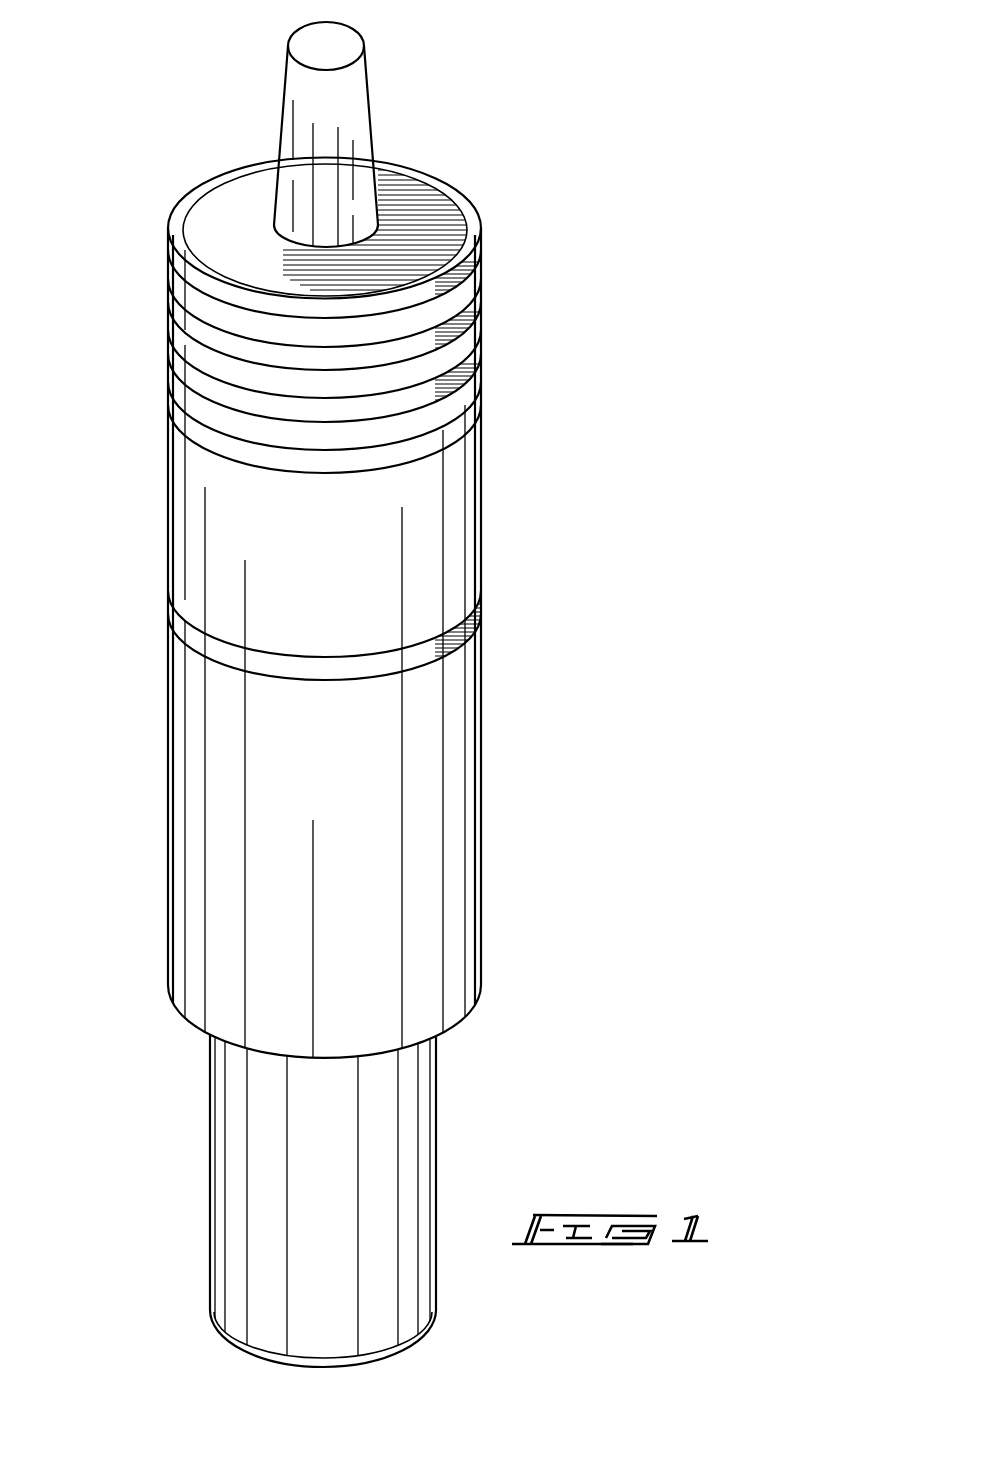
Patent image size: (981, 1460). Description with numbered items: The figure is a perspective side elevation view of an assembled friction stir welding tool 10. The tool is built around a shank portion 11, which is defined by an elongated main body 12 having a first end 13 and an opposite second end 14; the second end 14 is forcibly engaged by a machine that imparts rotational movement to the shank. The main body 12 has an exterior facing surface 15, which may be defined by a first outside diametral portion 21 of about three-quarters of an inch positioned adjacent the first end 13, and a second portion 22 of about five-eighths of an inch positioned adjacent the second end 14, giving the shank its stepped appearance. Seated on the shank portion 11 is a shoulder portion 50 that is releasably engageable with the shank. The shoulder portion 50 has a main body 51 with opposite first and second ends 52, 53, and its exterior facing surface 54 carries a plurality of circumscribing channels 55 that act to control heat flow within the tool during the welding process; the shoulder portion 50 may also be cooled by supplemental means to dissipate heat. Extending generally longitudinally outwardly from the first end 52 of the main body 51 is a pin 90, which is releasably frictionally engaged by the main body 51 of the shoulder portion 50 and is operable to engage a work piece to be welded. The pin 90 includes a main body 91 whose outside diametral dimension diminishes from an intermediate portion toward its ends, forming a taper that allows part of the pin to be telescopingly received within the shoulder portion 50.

The friction stir welding tool 10 is at (687, 524).
The shank portion 11 is at (505, 961).
The main body 12 is at (427, 853).
The first end 13 is at (467, 660).
The second end 14 is at (410, 1193).
The exterior facing surface 15 is at (195, 938).
The first outside diametral portion 21 is at (190, 832).
The second portion 22 is at (233, 1243).
The shoulder portion 50 is at (549, 420).
The main body 51 is at (193, 535).
The first end 52 is at (433, 203).
The second end 53 is at (467, 595).
The exterior facing surface 54 is at (482, 508).
The circumscribing channels 55 is at (492, 408).
The pin 90 is at (386, 143).
The main body 91 is at (358, 33).